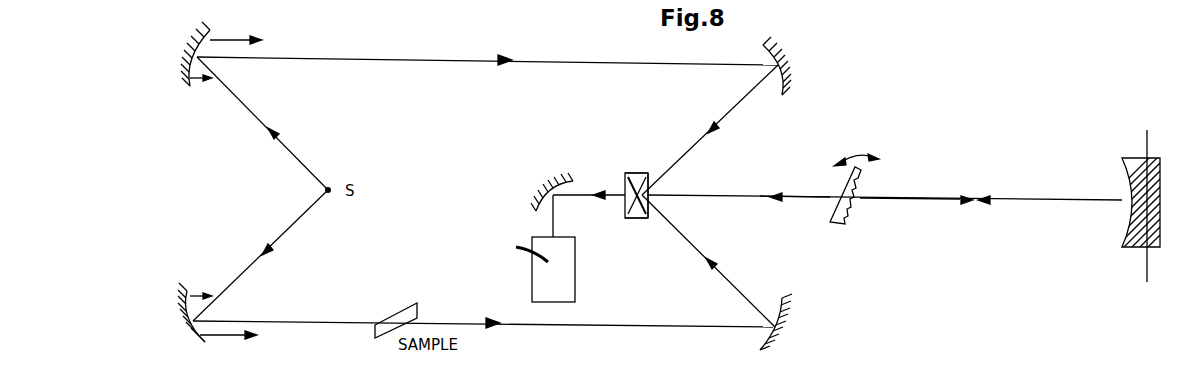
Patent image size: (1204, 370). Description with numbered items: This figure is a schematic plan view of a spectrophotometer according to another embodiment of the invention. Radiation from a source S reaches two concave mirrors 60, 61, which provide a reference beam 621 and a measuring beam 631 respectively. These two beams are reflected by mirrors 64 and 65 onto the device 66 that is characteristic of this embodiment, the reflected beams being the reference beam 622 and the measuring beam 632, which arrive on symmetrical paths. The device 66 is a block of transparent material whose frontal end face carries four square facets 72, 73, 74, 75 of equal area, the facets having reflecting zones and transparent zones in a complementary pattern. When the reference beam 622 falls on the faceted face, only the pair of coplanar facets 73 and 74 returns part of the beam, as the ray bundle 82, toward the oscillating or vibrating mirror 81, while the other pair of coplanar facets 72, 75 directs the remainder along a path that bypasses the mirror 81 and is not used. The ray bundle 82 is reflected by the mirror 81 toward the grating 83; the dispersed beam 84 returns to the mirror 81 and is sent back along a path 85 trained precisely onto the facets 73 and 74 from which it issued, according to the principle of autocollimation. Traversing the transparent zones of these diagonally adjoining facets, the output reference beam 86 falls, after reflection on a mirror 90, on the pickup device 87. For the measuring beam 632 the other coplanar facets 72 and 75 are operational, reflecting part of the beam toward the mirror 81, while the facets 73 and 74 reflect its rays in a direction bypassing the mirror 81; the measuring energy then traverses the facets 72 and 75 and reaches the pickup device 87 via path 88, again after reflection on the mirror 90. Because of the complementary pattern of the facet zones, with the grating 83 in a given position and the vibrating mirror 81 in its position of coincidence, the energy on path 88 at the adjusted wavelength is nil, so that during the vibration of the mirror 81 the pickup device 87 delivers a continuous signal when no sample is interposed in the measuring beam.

The concave mirror 60 is at (197, 44).
The concave mirror 61 is at (192, 338).
The mirror 64 is at (790, 72).
The mirror 65 is at (788, 312).
The reference beam 621 is at (377, 59).
The reference beam 622 is at (736, 104).
The measuring beam 631 is at (345, 320).
The measuring beam 632 is at (739, 286).
The device 66 is at (632, 217).
The facet 72 is at (650, 214).
The facet 73 is at (640, 172).
The facet 74 is at (655, 203).
The facet 75 is at (649, 183).
The oscillating or vibrating mirror 81 is at (1162, 200).
The ray bundle 82 is at (692, 194).
The grating 83 is at (836, 226).
The dispersed beam 84 is at (941, 201).
The path 85 is at (775, 196).
The output reference beam 86 is at (578, 186).
The pickup device 87 is at (545, 273).
The path 88 is at (612, 197).
The mirror 90 is at (532, 206).